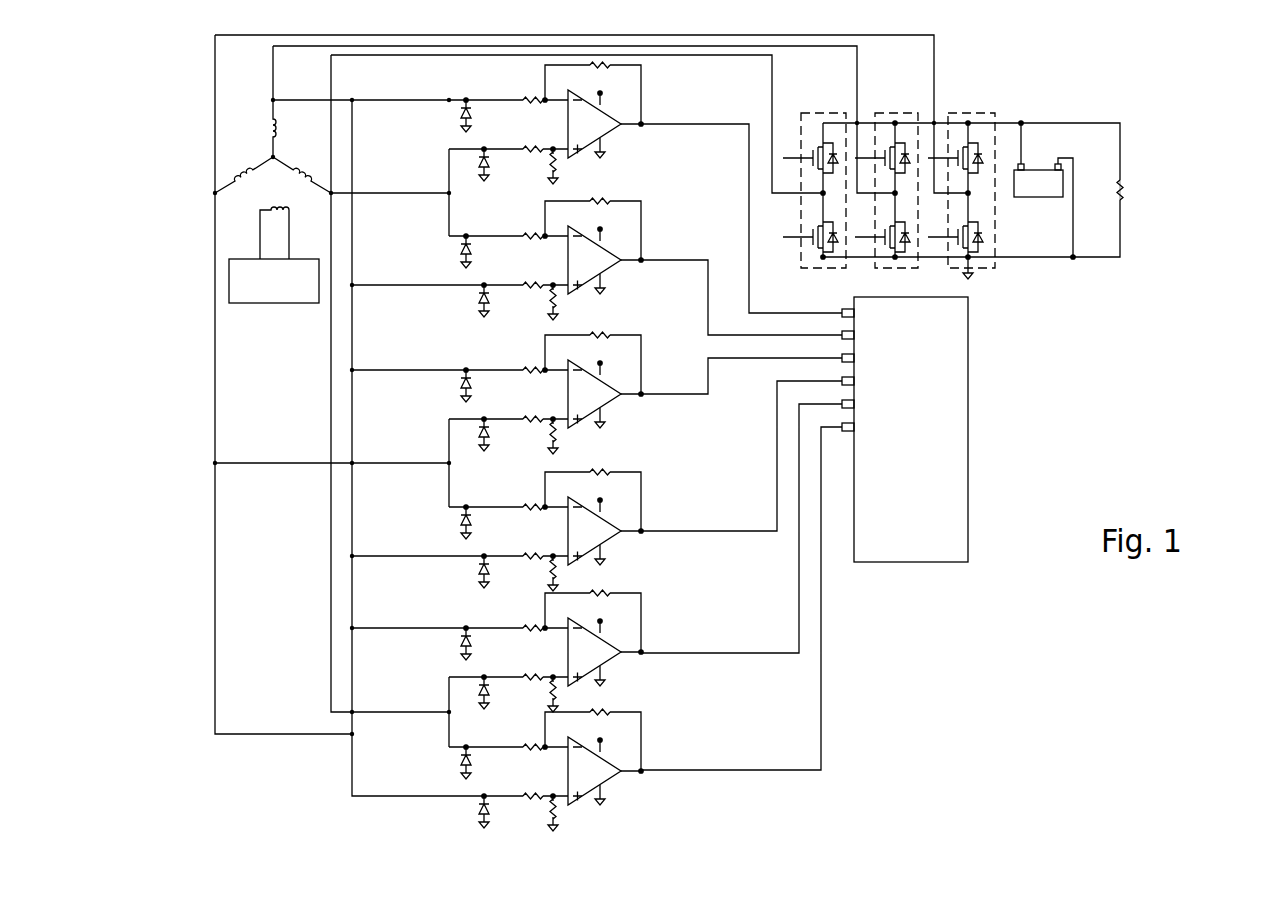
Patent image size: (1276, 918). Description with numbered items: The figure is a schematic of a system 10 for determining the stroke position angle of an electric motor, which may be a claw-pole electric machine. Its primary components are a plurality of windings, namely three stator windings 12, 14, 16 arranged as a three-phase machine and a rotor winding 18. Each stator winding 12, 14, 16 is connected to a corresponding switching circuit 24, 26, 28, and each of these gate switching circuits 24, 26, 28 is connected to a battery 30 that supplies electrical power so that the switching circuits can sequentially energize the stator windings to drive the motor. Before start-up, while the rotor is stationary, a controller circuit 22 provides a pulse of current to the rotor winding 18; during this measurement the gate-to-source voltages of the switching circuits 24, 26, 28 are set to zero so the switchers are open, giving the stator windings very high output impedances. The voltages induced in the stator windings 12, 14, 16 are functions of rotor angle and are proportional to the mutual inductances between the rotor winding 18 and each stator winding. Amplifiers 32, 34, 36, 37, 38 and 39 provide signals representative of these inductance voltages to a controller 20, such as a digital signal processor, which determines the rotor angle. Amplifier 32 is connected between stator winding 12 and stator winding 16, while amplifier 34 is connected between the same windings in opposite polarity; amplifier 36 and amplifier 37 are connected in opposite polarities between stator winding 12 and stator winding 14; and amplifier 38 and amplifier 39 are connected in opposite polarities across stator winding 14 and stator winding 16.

The system 10 is at (1148, 97).
The stator winding 12 is at (273, 128).
The stator winding 14 is at (248, 172).
The stator winding 16 is at (297, 170).
The rotor winding 18 is at (267, 217).
The controller 20 is at (968, 352).
The controller circuit 22 is at (270, 303).
The switching circuit 24 is at (903, 110).
The switching circuit 26 is at (972, 110).
The switching circuit 28 is at (817, 111).
The battery 30 is at (1043, 165).
The amplifier 32 is at (604, 133).
The amplifier 34 is at (604, 269).
The amplifier 36 is at (604, 403).
The amplifier 37 is at (604, 540).
The amplifier 38 is at (604, 661).
The amplifier 39 is at (604, 780).